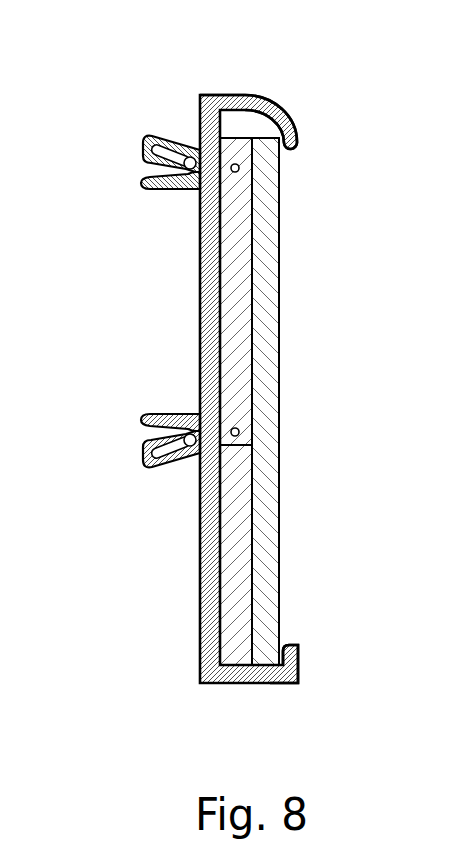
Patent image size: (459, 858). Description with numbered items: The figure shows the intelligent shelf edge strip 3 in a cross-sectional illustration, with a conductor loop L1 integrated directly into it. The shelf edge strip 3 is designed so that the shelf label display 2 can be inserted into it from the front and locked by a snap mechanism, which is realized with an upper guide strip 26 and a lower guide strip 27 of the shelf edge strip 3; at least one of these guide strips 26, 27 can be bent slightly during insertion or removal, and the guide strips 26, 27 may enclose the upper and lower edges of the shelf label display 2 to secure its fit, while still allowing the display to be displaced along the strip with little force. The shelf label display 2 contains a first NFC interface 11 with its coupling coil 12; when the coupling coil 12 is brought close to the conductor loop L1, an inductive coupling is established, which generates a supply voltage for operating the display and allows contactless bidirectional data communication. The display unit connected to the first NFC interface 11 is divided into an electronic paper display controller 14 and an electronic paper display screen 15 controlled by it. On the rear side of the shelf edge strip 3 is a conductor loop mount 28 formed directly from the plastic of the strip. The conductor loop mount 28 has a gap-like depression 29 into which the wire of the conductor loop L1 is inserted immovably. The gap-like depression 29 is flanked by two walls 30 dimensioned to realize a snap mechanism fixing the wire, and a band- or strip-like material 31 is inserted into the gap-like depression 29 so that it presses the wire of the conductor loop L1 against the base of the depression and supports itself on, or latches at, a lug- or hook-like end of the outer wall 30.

The shelf label display 2 is at (292, 320).
The shelf edge strip 3 is at (267, 88).
The first NFC interface 11 is at (232, 262).
The coupling coil 12 is at (241, 164).
The electronic paper display controller 14 is at (238, 583).
The electronic paper display screen 15 is at (272, 500).
The upper guide strip 26 is at (290, 117).
The lower guide strip 27 is at (278, 686).
The conductor loop mount 28 is at (136, 133).
The gap-like depression 29 is at (117, 178).
The walls 30 is at (168, 134).
The band- or strip-like material 31 is at (155, 158).
The conductor loop L1 is at (186, 192).